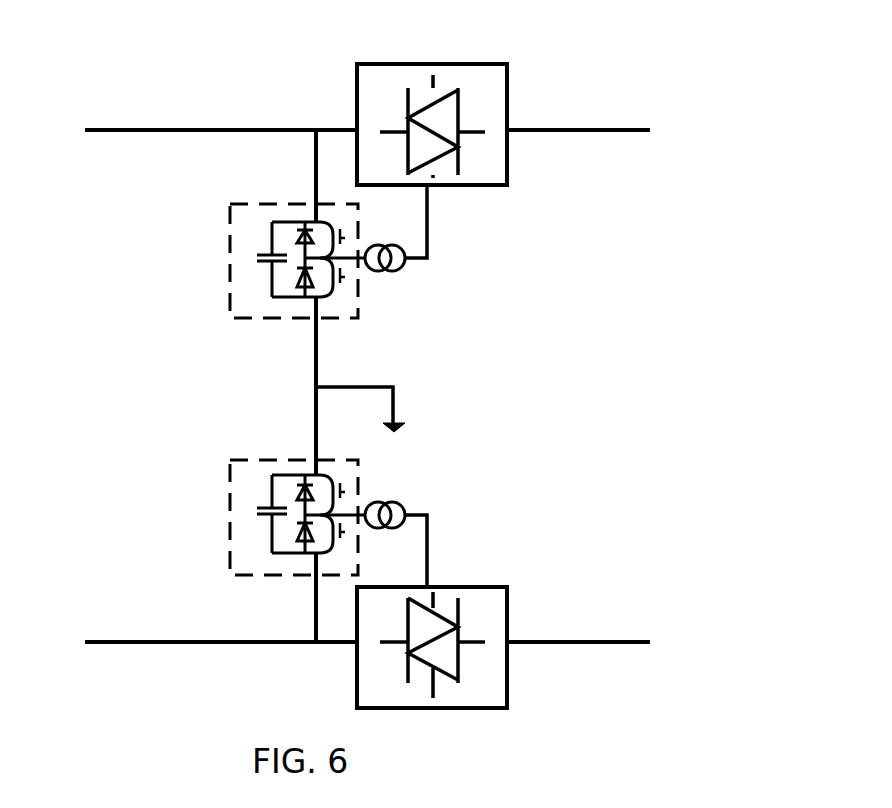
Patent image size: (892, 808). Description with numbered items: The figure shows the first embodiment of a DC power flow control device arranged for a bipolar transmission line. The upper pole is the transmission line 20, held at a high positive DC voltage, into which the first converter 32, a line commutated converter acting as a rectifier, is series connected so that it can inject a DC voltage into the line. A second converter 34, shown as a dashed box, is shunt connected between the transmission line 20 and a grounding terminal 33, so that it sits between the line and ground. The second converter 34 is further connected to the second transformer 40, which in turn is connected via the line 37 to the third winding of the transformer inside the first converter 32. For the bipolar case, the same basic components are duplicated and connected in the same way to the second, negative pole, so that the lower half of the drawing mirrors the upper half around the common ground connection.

The transmission line 20 is at (200, 131).
The first converter 32 is at (510, 157).
The line 37 is at (428, 222).
The second transformer 40 is at (400, 270).
The second converter 34 is at (230, 253).
The grounding terminal 33 is at (407, 423).